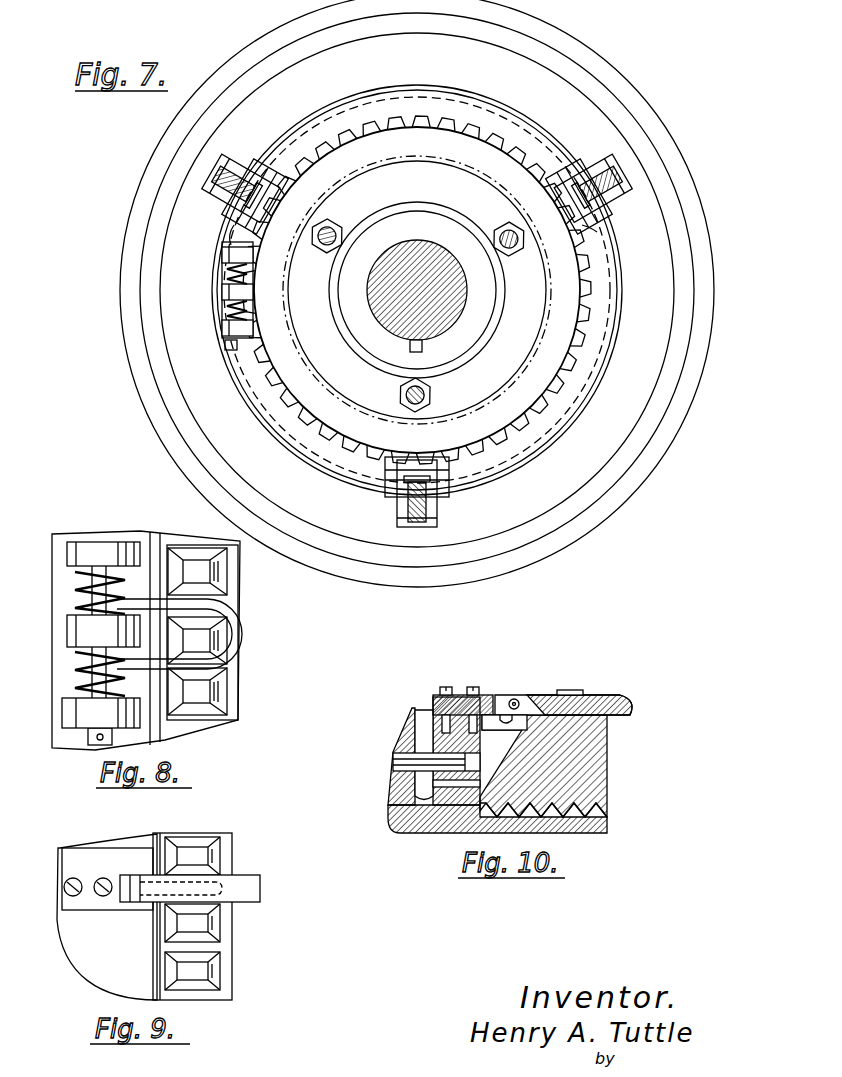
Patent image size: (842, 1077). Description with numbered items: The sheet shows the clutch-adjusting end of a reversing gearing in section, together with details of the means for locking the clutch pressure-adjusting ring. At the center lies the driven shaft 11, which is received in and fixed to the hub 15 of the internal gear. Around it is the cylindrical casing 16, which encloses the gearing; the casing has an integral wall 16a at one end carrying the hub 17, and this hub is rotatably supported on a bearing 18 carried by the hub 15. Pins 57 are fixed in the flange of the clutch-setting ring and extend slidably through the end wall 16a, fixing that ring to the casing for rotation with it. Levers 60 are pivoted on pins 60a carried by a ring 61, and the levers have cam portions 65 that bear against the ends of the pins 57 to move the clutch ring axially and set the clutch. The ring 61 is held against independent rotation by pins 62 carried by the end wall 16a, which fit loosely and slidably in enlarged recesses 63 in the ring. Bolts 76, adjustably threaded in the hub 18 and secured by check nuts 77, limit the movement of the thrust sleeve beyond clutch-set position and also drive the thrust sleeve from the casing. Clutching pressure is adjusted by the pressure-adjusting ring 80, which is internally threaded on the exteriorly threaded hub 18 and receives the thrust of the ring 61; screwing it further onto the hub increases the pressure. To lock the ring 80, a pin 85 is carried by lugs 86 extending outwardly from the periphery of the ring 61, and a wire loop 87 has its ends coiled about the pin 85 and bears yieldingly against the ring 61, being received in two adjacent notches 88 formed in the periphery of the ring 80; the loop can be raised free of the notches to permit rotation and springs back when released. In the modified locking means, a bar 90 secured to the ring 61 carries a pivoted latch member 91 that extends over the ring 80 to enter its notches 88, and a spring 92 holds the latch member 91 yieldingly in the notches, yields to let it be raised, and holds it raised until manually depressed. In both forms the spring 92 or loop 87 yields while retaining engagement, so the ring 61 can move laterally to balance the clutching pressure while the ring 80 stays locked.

In FIG. 7, the driven shaft 11 is at (451, 290).
In FIG. 7, the hub 15 is at (451, 359).
In FIG. 7, the cylindrical casing 16 is at (297, 0).
In FIG. 10, the integral wall 16a is at (403, 730).
In FIG. 7, the hub 17 is at (423, 290).
In FIG. 10, the hub 17 is at (612, 827).
In FIG. 7, the bearing 18 is at (433, 290).
In FIG. 7, the pins 57 is at (409, 334).
In FIG. 7, the levers 60 is at (417, 335).
In FIG. 7, the pins 60a is at (205, 232).
In FIG. 8, the ring 61 is at (82, 530).
In FIG. 9, the ring 61 is at (130, 846).
In FIG. 10, the ring 61 is at (470, 782).
In FIG. 10, the pins 62 is at (394, 760).
In FIG. 10, the recesses 63 is at (604, 792).
In FIG. 7, the cam portions 65 is at (615, 238).
In FIG. 7, the bolts 76 is at (418, 298).
In FIG. 7, the check nuts 77 is at (420, 308).
In FIG. 7, the pressure-adjusting ring 80 is at (425, 290).
In FIG. 8, the pressure-adjusting ring 80 is at (242, 686).
In FIG. 9, the pressure-adjusting ring 80 is at (232, 940).
In FIG. 10, the pressure-adjusting ring 80 is at (610, 768).
In FIG. 7, the pin 85 is at (224, 294).
In FIG. 8, the pin 85 is at (88, 746).
In FIG. 7, the lugs 86 is at (216, 293).
In FIG. 8, the lugs 86 is at (70, 553).
In FIG. 7, the wire loop 87 is at (254, 292).
In FIG. 8, the wire loop 87 is at (243, 616).
In FIG. 7, the notches 88 is at (447, 290).
In FIG. 8, the notches 88 is at (252, 633).
In FIG. 9, the notches 88 is at (203, 944).
In FIG. 10, the notches 88 is at (570, 690).
In FIG. 9, the bar 90 is at (84, 870).
In FIG. 10, the bar 90 is at (458, 692).
In FIG. 9, the latch member 91 is at (245, 875).
In FIG. 10, the latch member 91 is at (602, 698).
In FIG. 10, the spring 92 is at (496, 699).